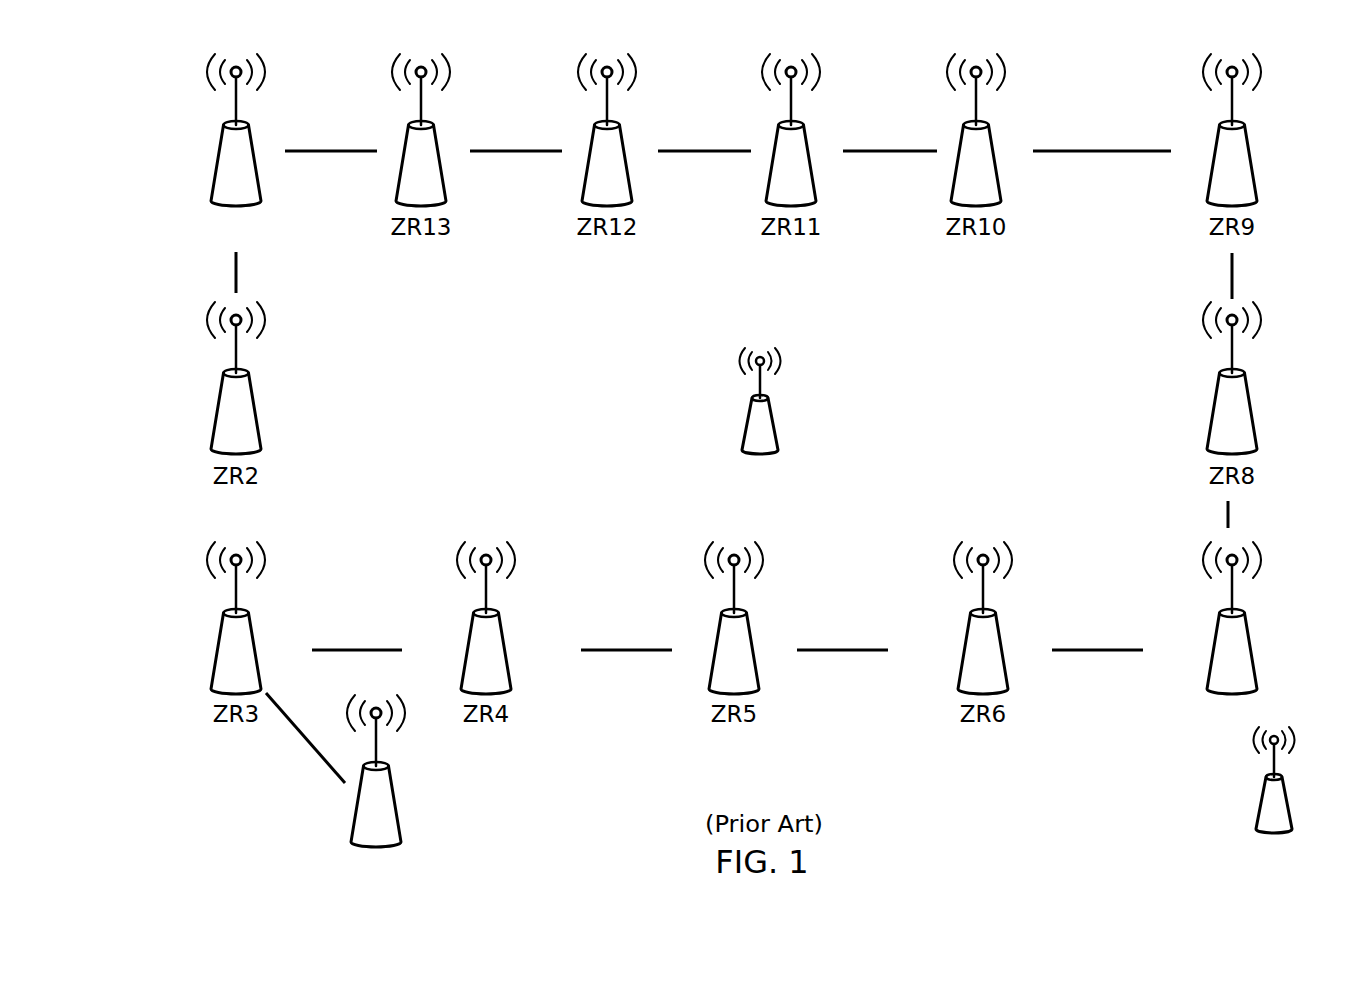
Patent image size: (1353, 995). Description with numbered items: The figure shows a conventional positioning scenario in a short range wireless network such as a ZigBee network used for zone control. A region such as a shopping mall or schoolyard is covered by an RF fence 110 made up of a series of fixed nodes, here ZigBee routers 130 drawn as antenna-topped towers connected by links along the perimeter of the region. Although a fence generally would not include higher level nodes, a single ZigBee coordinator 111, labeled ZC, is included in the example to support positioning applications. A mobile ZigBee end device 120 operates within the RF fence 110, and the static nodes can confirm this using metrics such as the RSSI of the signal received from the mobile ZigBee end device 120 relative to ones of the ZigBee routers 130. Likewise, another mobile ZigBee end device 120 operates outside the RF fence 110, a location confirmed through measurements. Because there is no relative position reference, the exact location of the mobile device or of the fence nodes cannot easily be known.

The ZigBee router 130 is at (218, 155).
The mobile ZigBee end device 120 is at (771, 410).
The ZigBee coordinator 111 is at (388, 765).
The RF fence 110 is at (1092, 651).